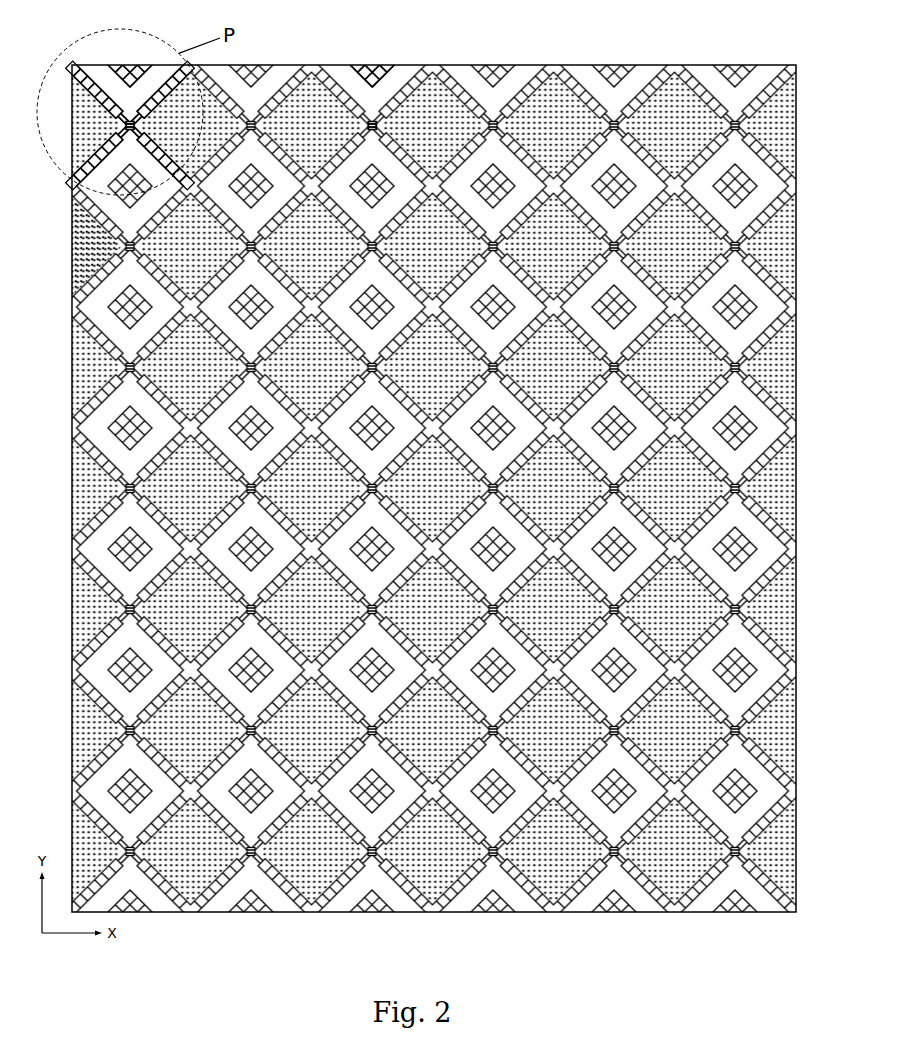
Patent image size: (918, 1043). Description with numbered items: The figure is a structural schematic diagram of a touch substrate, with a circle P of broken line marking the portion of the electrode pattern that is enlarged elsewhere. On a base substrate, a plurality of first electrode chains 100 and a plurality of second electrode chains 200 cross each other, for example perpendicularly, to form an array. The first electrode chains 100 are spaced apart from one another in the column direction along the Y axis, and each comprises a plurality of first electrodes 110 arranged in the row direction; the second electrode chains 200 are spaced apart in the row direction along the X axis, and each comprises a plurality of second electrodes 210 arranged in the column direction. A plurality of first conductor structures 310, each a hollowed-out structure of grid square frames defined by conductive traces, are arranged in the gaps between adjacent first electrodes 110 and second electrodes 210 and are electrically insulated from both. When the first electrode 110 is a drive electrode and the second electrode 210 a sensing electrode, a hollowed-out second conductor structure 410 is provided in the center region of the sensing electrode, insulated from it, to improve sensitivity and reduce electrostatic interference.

The first electrode chain 100 is at (108, 247).
The second electrode chain 200 is at (372, 93).
The first electrode 110 is at (134, 125).
The second electrode 210 is at (130, 125).
The first conductor structure 310 is at (420, 482).
The second conductor structure 410 is at (130, 65).